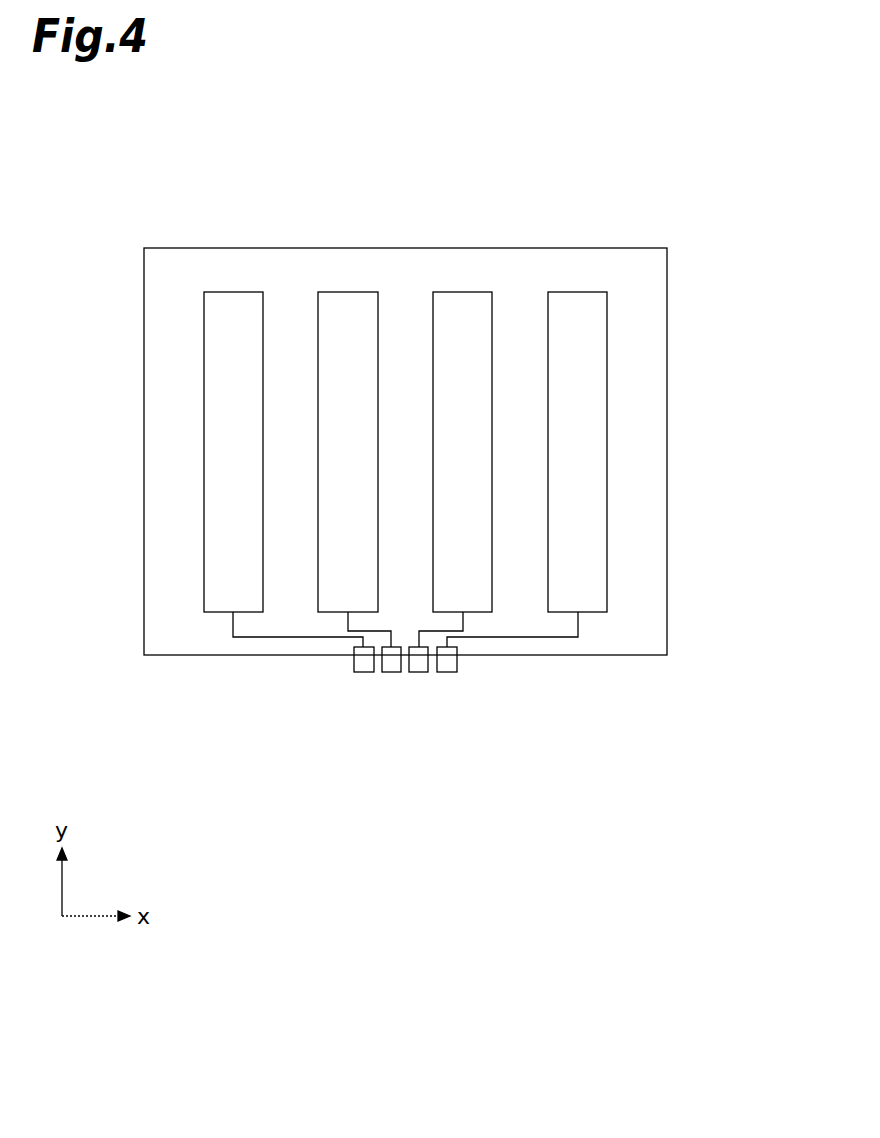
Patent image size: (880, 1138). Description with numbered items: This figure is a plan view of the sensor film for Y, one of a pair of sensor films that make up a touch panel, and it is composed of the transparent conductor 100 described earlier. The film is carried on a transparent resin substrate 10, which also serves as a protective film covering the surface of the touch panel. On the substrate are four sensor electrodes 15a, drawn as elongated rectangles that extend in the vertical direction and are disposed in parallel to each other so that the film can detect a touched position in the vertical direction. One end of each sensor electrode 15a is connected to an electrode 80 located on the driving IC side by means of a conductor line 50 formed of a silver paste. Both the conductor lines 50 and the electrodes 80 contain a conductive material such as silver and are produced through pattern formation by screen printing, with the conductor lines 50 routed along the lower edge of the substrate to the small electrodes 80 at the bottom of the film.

The transparent conductor 100 is at (658, 207).
The transparent resin substrate 10 is at (650, 279).
The sensor electrodes 15a is at (597, 459).
The conductor line 50 is at (580, 630).
The electrode 80 is at (447, 665).